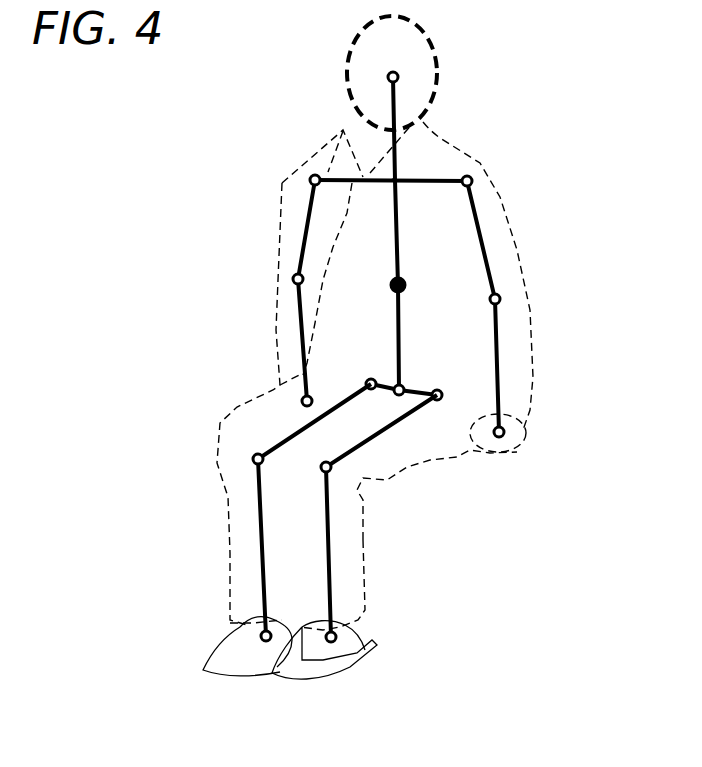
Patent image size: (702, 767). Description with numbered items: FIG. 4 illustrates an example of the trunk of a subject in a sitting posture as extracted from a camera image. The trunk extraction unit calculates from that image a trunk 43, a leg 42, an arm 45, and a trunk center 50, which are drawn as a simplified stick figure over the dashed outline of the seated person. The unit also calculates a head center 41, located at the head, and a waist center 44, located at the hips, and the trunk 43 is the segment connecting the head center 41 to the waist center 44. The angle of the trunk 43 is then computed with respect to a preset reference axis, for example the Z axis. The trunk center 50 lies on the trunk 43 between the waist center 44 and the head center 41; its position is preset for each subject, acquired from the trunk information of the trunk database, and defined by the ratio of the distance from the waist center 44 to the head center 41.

The head center 41 is at (396, 75).
The leg 42 is at (261, 488).
The trunk 43 is at (400, 237).
The waist center 44 is at (402, 386).
The arm 45 is at (304, 244).
The trunk center 50 is at (405, 280).